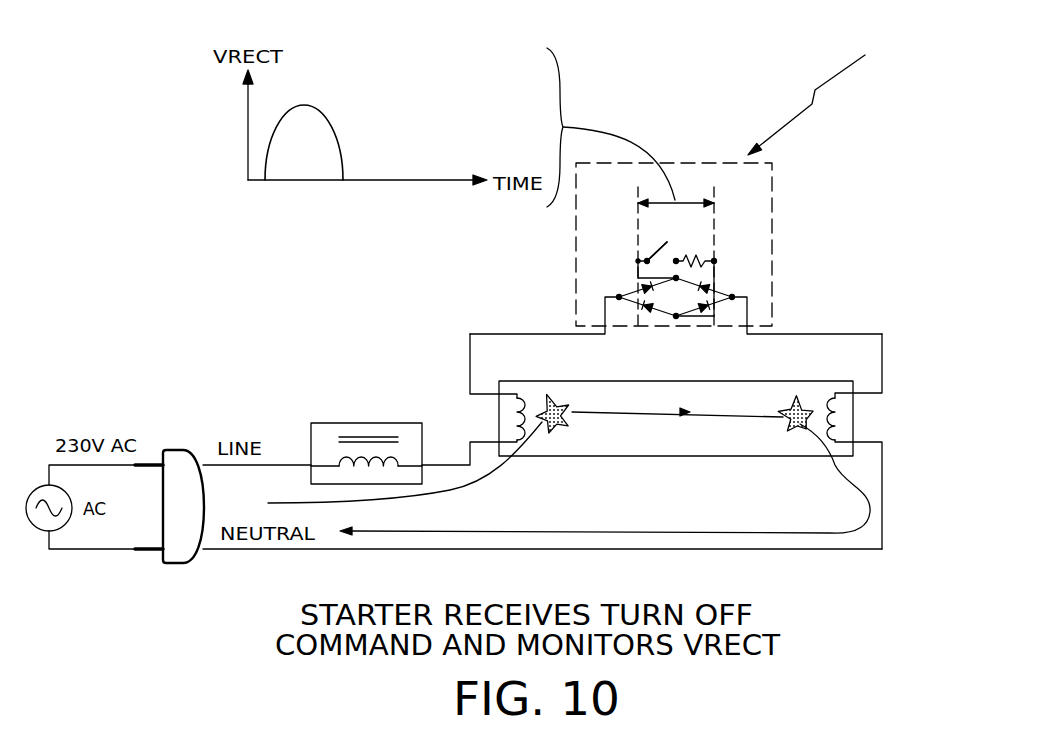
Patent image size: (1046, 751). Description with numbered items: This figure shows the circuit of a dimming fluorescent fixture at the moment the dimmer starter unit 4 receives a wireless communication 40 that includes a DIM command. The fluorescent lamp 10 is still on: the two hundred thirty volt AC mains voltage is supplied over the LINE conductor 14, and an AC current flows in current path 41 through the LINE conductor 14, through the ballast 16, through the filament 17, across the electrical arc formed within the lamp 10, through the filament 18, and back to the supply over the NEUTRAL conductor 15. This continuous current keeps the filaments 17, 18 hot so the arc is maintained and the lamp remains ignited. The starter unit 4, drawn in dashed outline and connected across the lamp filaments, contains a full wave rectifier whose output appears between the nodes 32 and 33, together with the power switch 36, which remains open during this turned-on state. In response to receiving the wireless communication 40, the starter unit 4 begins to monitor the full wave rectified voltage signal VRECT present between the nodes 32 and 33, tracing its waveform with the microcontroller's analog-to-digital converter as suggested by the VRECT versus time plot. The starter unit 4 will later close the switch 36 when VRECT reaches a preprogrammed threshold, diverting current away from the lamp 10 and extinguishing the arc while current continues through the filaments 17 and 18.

The starter unit 4 is at (772, 261).
The fluorescent lamp 10 is at (706, 381).
The LINE conductor 14 is at (112, 467).
The NEUTRAL conductor 15 is at (100, 550).
The ballast 16 is at (381, 423).
The filament 17 is at (512, 419).
The filament 18 is at (850, 417).
The node 32 is at (638, 261).
The node 33 is at (714, 261).
The power switch 36 is at (667, 242).
The wireless communication 40 is at (795, 113).
The current path 41 is at (669, 411).